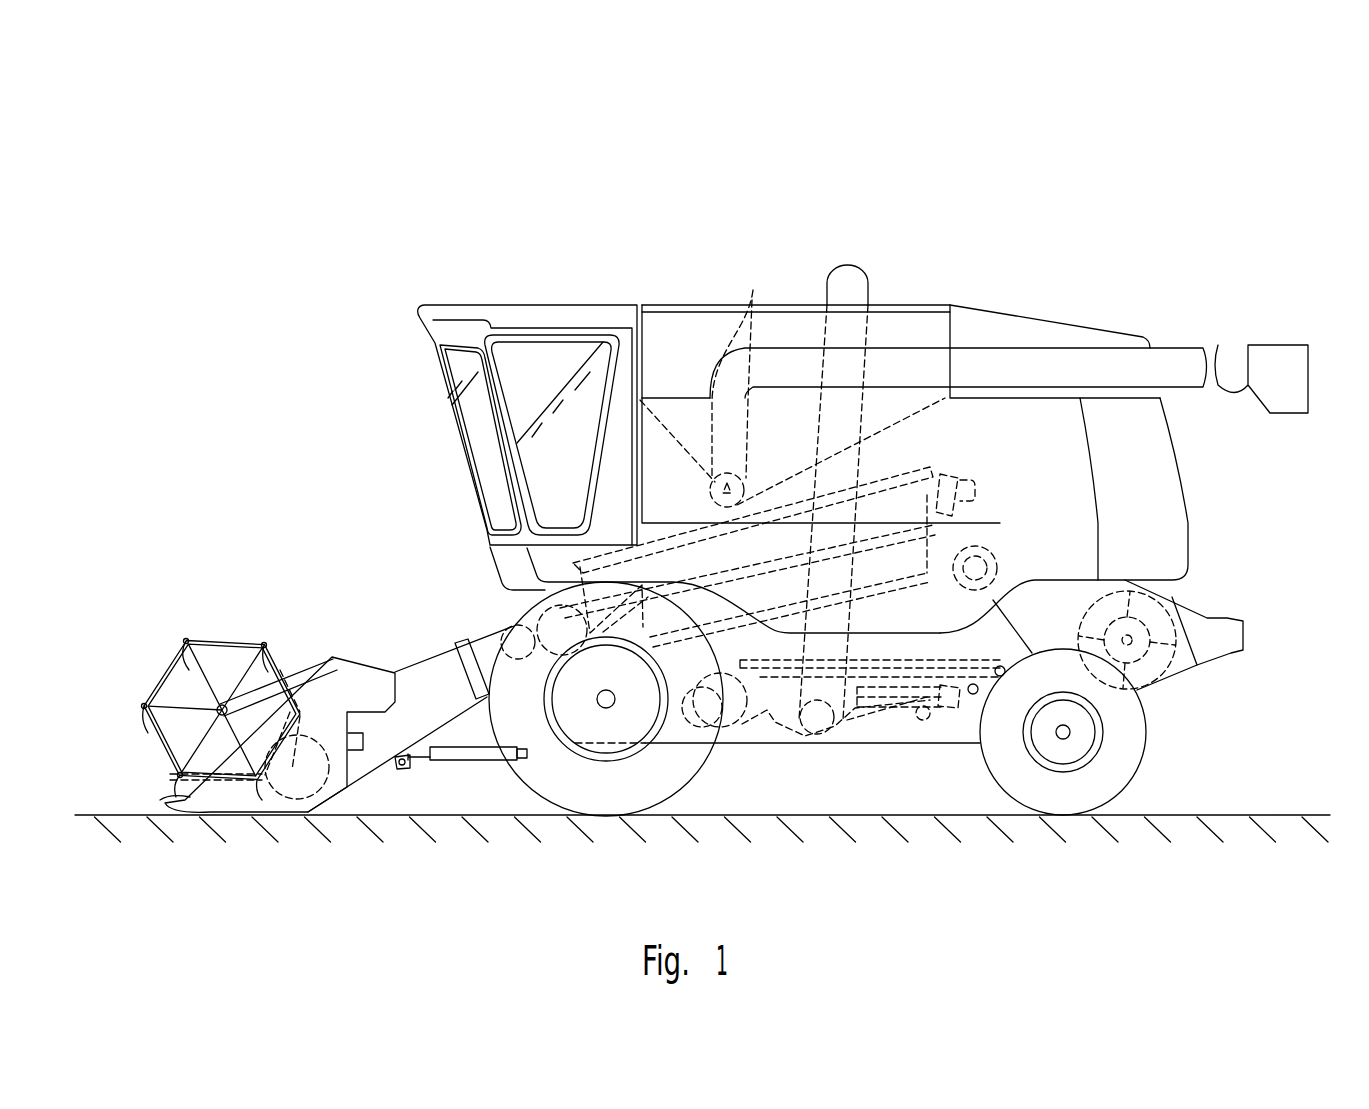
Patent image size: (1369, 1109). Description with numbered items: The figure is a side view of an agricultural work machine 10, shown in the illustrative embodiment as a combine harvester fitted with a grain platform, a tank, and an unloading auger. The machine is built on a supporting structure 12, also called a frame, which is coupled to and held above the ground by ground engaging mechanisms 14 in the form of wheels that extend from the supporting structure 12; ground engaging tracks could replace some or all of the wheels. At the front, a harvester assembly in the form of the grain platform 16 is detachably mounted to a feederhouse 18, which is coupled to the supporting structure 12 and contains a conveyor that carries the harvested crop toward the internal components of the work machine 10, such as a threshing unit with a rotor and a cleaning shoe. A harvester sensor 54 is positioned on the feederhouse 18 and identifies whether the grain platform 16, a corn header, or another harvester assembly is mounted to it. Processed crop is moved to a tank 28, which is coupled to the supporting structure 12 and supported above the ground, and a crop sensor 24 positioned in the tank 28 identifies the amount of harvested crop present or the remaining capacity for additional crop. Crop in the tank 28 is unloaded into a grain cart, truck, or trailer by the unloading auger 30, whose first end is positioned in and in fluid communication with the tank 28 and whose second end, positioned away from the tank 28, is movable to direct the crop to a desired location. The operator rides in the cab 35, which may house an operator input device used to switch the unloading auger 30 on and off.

The agricultural work machine 10 is at (953, 187).
The supporting structure 12 is at (877, 730).
The ground engaging mechanisms 14 is at (675, 775).
The grain platform 16 is at (182, 794).
The feederhouse 18 is at (420, 680).
The crop sensor 24 is at (751, 300).
The tank 28 is at (683, 335).
The unloading auger 30 is at (1068, 362).
The cab 35 is at (472, 437).
The harvester sensor 54 is at (358, 750).